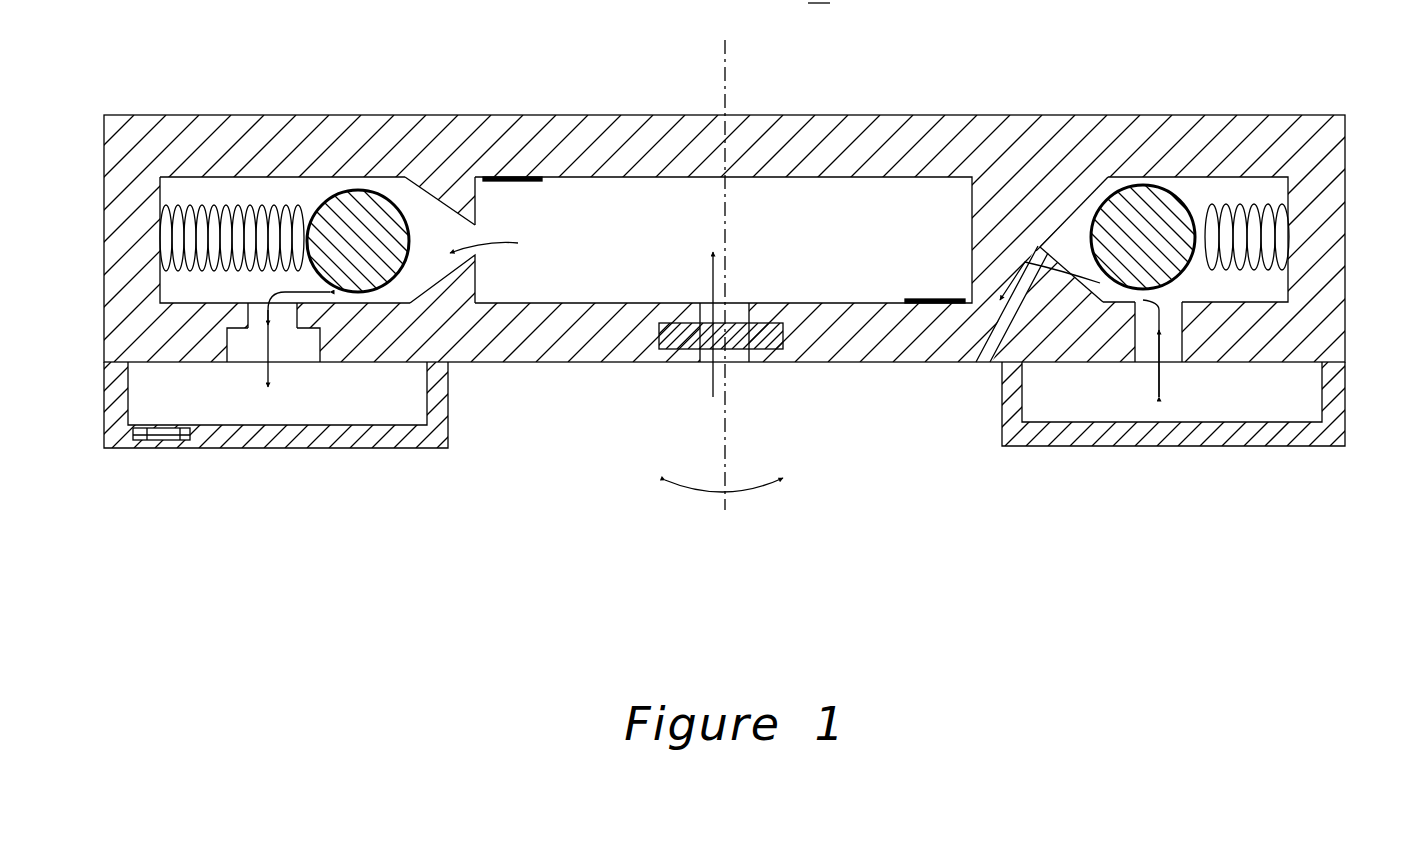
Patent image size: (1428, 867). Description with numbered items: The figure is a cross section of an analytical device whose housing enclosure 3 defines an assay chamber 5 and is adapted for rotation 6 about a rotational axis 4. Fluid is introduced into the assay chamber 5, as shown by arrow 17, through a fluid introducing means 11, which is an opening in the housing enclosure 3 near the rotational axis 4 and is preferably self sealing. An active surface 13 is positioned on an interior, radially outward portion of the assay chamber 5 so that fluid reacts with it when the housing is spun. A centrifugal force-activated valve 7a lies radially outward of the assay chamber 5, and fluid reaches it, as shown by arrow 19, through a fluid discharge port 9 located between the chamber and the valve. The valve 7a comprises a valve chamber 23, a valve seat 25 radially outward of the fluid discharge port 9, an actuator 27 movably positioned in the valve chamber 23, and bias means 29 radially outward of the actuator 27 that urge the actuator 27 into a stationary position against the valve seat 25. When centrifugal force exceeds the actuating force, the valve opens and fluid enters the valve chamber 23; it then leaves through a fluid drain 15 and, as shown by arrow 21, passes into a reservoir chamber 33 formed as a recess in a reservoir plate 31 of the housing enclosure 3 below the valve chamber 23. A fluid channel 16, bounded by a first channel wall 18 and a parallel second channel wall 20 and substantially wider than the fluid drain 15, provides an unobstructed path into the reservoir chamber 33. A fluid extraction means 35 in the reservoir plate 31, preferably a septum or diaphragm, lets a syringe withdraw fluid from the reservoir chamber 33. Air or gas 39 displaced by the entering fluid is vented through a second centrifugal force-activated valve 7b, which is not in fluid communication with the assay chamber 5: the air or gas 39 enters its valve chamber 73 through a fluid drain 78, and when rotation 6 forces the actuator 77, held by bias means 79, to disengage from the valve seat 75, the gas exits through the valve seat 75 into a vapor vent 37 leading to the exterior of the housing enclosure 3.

The housing enclosure 3 is at (1188, 113).
The rotational axis 4 is at (724, 297).
The assay chamber 5 is at (767, 195).
The rotation 6 is at (736, 478).
The centrifugal force-activated valve 7a is at (160, 180).
The centrifugal force-activated valve 7b is at (1265, 173).
The fluid discharge port 9 is at (460, 232).
The fluid introducing means 11 is at (737, 340).
The active surface 13 is at (520, 175).
The fluid drain 15 is at (300, 318).
The fluid channel 16 is at (277, 388).
The arrow 17 is at (710, 343).
The first channel wall 18 is at (322, 345).
The arrow 19 is at (500, 245).
The second channel wall 20 is at (230, 345).
The arrow 21 is at (291, 358).
The valve chamber 23 is at (263, 190).
The valve seat 25 is at (440, 193).
The actuator 27 is at (350, 213).
The bias means 29 is at (205, 207).
The reservoir plate 31 is at (410, 448).
The reservoir chamber 33 is at (410, 395).
The fluid extraction means 35 is at (165, 445).
The vapor vent 37 is at (1030, 245).
The air or gas 39 is at (975, 355).
The valve chamber 73 is at (1275, 295).
The valve seat 75 is at (1073, 195).
The actuator 77 is at (1135, 220).
The fluid drain 78 is at (1185, 325).
The bias means 79 is at (1275, 237).